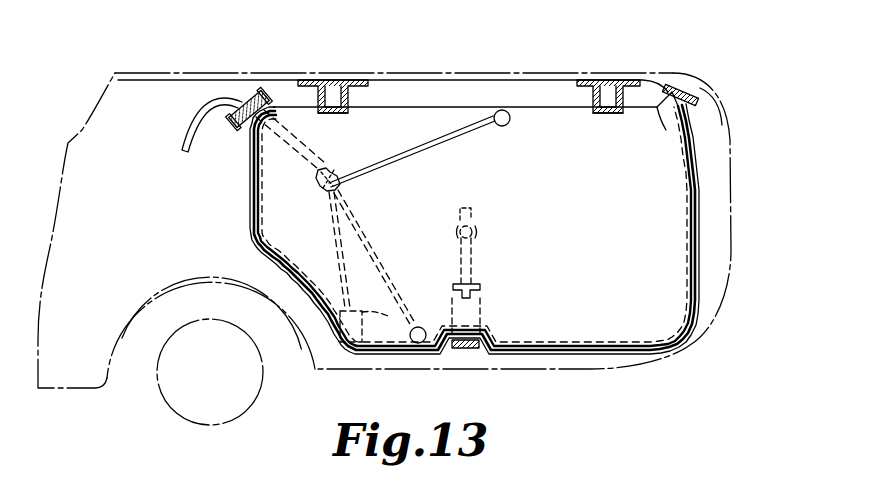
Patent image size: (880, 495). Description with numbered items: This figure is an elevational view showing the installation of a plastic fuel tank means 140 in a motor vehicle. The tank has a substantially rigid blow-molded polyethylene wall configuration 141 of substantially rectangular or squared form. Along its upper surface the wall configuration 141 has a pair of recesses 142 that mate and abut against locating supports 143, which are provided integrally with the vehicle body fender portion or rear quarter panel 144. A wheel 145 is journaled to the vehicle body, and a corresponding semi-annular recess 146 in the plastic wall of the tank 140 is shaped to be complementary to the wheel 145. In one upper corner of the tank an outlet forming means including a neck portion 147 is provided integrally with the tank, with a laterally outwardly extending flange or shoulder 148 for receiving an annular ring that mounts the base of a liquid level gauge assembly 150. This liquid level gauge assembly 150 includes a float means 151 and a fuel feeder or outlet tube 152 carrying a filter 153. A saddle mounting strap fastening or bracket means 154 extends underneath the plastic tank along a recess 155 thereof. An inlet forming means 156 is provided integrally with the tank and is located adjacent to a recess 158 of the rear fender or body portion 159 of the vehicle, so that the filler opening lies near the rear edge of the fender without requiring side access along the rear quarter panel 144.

The plastic fuel tank means 140 is at (578, 356).
The wall configuration 141 is at (611, 330).
The recesses 142 is at (336, 114).
The locating supports 143 is at (335, 92).
The rear quarter panel 144 is at (147, 72).
The wheel 145 is at (110, 420).
The semi-annular recess 146 is at (250, 284).
The neck portion 147 is at (245, 131).
The flange or shoulder 148 is at (245, 92).
The liquid level gauge assembly 150 is at (318, 183).
The float means 151 is at (502, 127).
The fuel feeder or outlet tube 152 is at (336, 239).
The filter 153 is at (374, 326).
The saddle mounting strap fastening or bracket means 154 is at (480, 284).
The recess 155 is at (483, 327).
The inlet forming means 156 is at (696, 115).
The recess 158 is at (722, 101).
The rear fender or body portion 159 is at (735, 172).